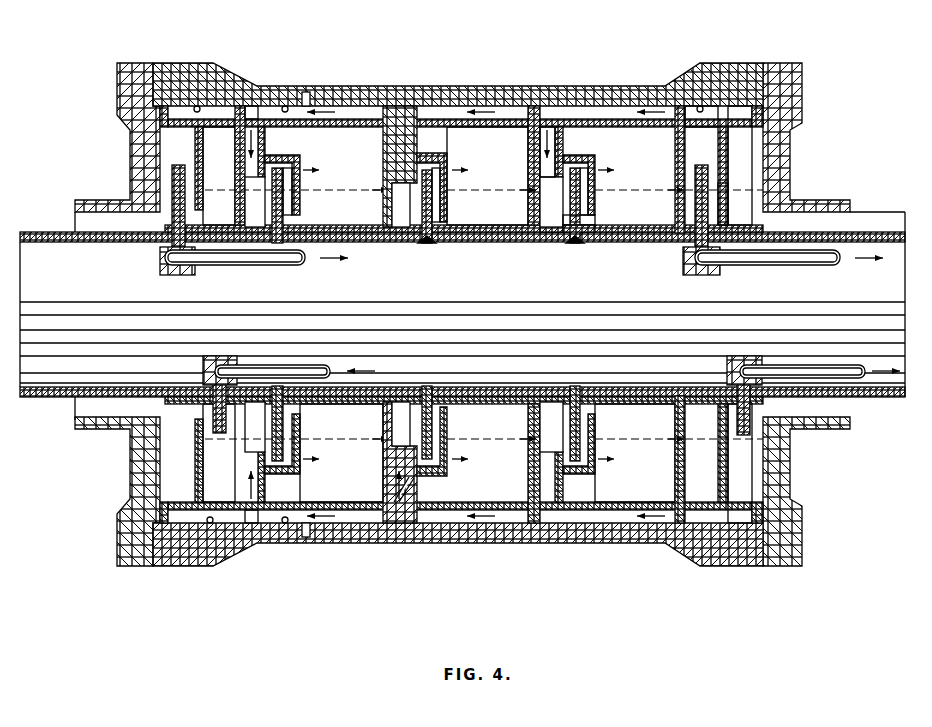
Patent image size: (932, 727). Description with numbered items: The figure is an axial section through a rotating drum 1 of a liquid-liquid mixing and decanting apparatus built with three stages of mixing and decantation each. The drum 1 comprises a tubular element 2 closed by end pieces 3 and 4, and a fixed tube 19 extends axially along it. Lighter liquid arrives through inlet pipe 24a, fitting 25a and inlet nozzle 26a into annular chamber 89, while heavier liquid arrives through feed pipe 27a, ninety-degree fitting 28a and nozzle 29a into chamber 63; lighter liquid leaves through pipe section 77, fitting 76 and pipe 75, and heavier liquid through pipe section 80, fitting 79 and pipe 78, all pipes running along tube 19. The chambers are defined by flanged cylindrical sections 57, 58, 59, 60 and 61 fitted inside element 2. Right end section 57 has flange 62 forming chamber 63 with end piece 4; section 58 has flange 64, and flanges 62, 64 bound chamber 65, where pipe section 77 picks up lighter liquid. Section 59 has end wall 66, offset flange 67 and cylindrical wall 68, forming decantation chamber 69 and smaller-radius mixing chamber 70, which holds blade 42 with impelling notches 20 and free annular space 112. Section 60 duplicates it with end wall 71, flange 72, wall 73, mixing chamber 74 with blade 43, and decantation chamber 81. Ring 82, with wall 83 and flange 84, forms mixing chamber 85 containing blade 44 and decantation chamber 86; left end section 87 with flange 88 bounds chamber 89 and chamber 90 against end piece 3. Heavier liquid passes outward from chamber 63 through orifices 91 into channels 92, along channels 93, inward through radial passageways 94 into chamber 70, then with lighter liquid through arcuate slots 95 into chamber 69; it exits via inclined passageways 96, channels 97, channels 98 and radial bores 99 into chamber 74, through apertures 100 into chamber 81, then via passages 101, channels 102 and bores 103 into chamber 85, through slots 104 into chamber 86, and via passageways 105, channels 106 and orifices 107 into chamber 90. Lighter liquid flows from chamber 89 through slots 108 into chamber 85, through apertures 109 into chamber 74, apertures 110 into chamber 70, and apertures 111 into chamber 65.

The drum 1 is at (456, 86).
The tubular element 2 is at (414, 92).
The end plate 3 is at (139, 147).
The end plate 4 is at (788, 146).
The fixed tube 19 is at (92, 244).
The impelling notches 20 is at (582, 168).
The inlet pipe 24a is at (266, 368).
The fitting 25a is at (226, 356).
The inlet nozzle 26a is at (211, 410).
The feed pipe 27a is at (806, 371).
The 90° fitting 28a is at (751, 356).
The nozzle 29a is at (752, 410).
The mixing blade 42 is at (574, 226).
The mixing blade 43 is at (428, 227).
The mixing blade 44 is at (278, 227).
The right end section 57 is at (702, 110).
The section 58 is at (571, 124).
The section 59 is at (504, 122).
The section 60 is at (383, 113).
The ring 61 is at (240, 110).
The flange 62 is at (723, 198).
The annular chamber 63 is at (767, 462).
The flange 64 is at (673, 487).
The annular chamber 65 is at (681, 482).
The end wall 66 is at (532, 491).
The flange 67 is at (594, 204).
The cylindrical wall 68 is at (590, 483).
The decantation chamber 69 is at (599, 432).
The mixing chamber 70 is at (582, 226).
The end wall 71 is at (382, 482).
The offset flange 72 is at (448, 428).
The cylindrical wall 73 is at (442, 474).
The mixing chamber 74 is at (435, 224).
The pipe 75 is at (783, 266).
The fitting 76 is at (681, 270).
The pipe section 77 is at (710, 220).
The pipe 78 is at (220, 268).
The fitting 79 is at (162, 270).
The pipe section 80 is at (170, 220).
The decantation chamber 81 is at (459, 216).
The ring 82 is at (265, 523).
The cylindrical wall 83 is at (299, 479).
The offset flange 84 is at (294, 420).
The mixing chamber 85 is at (293, 203).
The decantation chamber 86 is at (344, 458).
The left end section 87 is at (222, 502).
The flange 88 is at (202, 458).
The annular chamber 89 is at (208, 175).
The chamber 90 is at (153, 472).
The orifices 91 is at (737, 314).
The channels 92 is at (739, 108).
The channels 93 is at (667, 118).
The radial passageways 94 is at (545, 176).
The arcuate slots 95 is at (597, 175).
The inclined passageways 96 is at (545, 116).
The channels 97 is at (491, 520).
The channels 98 is at (407, 520).
The radial bores 99 is at (410, 490).
The apertures 100 is at (449, 172).
The inclined passages 101 is at (418, 126).
The peripheral channels 102 is at (305, 104).
The radial bores 103 is at (267, 144).
The arcuate slots 104 is at (303, 168).
The passageways 105 is at (262, 106).
The peripheral channels 106 is at (197, 105).
The orifices 107 is at (176, 126).
The arcuate slots 108 is at (243, 196).
The apertures 109 is at (381, 193).
The apertures 110 is at (537, 193).
The apertures 111 is at (677, 195).
The free annular space 112 is at (548, 222).